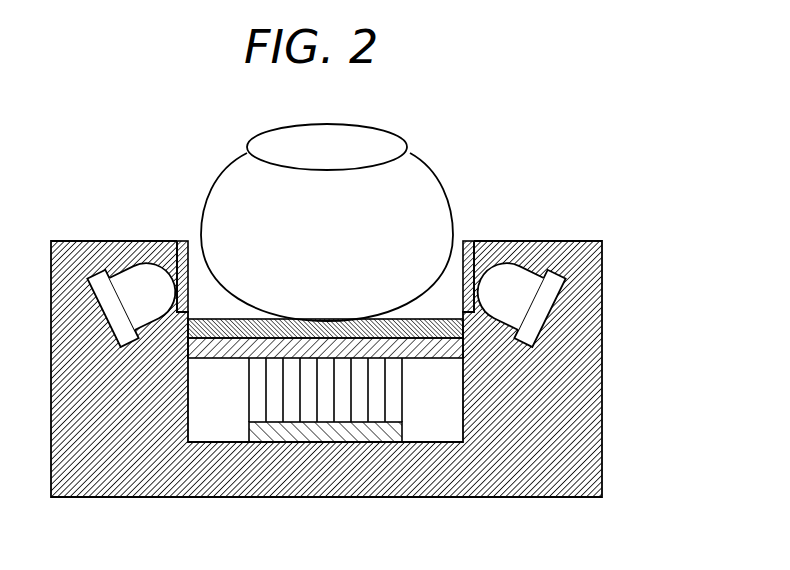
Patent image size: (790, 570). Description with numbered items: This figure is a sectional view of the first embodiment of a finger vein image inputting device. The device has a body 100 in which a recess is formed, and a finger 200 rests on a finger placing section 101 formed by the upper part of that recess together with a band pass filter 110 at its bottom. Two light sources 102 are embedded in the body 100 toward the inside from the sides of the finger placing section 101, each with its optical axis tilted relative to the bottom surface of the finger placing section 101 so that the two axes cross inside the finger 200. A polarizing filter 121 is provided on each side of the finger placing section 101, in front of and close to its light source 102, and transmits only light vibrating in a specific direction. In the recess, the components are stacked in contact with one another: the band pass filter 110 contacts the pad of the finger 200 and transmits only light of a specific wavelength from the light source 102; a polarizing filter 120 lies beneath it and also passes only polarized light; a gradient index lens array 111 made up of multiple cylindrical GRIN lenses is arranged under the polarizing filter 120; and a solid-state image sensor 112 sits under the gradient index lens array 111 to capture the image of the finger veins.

The body 100 is at (571, 258).
The finger placing section 101 is at (205, 312).
The light source 102 is at (128, 278).
The band pass filter 110 is at (453, 330).
The gradient index lens array 111 is at (393, 392).
The solid-state image sensor 112 is at (313, 432).
The polarizing filter 120 is at (453, 352).
The polarizing filter 121 is at (185, 243).
The finger 200 is at (239, 176).